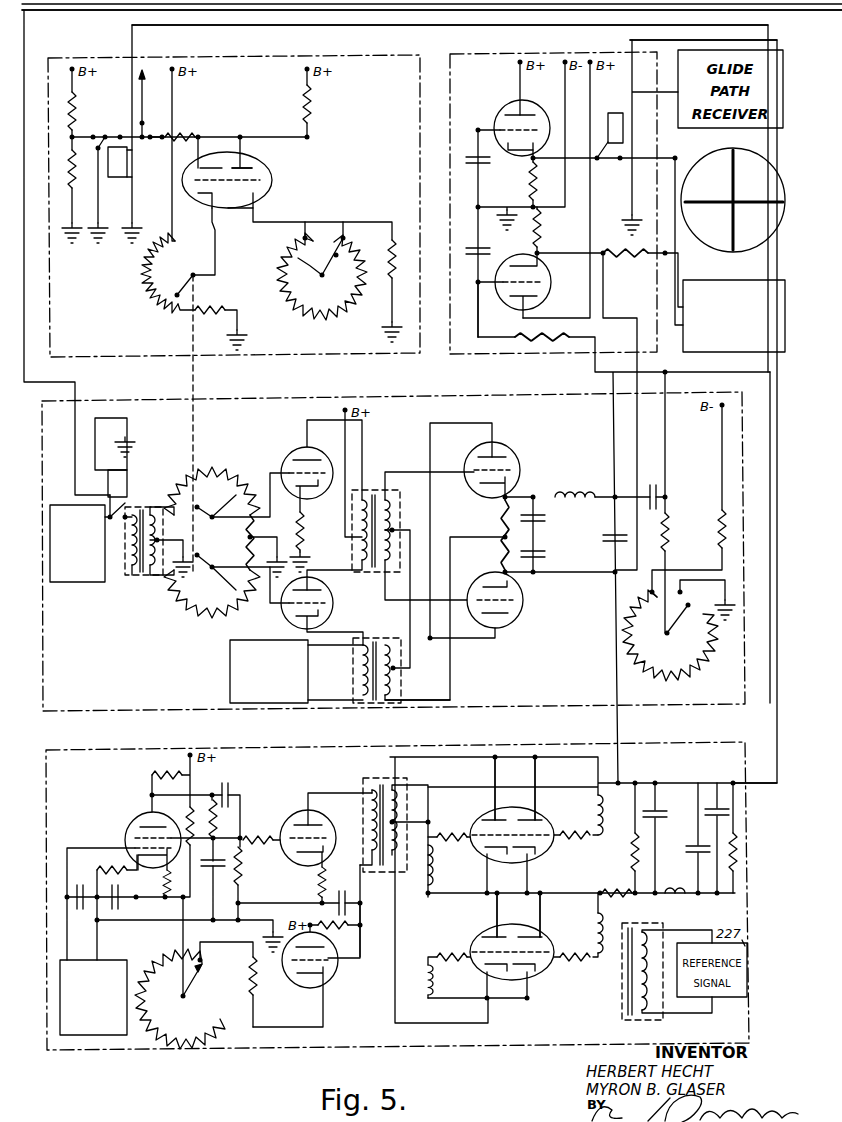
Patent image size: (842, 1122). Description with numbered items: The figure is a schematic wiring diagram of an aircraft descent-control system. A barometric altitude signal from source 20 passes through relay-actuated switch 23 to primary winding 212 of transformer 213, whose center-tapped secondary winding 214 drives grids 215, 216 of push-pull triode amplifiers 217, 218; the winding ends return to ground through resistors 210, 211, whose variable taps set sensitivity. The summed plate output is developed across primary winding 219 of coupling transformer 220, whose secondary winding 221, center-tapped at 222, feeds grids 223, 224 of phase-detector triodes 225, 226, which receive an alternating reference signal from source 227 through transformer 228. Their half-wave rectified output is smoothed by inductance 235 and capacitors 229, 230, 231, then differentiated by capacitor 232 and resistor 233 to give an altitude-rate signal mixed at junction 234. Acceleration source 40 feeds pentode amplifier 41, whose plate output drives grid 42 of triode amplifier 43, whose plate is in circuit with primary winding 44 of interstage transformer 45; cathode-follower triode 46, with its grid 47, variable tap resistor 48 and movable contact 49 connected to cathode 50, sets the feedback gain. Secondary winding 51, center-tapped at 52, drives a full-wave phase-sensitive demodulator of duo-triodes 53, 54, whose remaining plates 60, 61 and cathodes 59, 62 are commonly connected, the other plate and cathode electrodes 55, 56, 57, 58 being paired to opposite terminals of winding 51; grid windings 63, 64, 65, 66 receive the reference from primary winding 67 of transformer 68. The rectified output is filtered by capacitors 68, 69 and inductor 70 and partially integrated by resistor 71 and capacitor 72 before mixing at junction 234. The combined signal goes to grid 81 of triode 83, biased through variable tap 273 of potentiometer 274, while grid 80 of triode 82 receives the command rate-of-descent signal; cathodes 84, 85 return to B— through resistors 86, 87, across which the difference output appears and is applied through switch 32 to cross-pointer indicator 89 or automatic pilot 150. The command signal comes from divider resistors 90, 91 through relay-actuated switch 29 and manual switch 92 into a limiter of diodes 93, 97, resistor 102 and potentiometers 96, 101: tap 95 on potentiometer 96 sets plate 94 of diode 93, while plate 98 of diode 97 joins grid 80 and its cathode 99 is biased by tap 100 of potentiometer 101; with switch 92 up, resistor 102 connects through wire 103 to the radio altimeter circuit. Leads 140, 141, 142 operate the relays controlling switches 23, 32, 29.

The barometric altimeter signal source 20 is at (70, 507).
The relay-actuated switch 23 is at (131, 508).
The relay-actuated switch 29 is at (111, 136).
The relay-actuated switch 32 is at (600, 162).
The acceleration signal source 40 is at (109, 964).
The pentode amplifier 41 is at (138, 816).
The grid of triode amplifier 43 42 is at (291, 830).
The triode amplifier 43 is at (309, 806).
The primary winding of interstage transformer 44 is at (372, 778).
The interstage transformer 45 is at (403, 781).
The cathode-follower triode 46 is at (333, 972).
The grid of triode 46 47 is at (350, 950).
The variable tap resistor 48 is at (220, 1011).
The movable contact of resistor 48 49 is at (193, 953).
The cathode of pentode 41 50 is at (165, 871).
The secondary winding of interstage transformer 45 51 is at (397, 811).
The center-tap of secondary winding 51 52 is at (397, 826).
The duo-triode 53 is at (479, 820).
The duo-triode 54 is at (479, 937).
The plate 55 is at (496, 818).
The plate 56 is at (539, 818).
The cathode 57 is at (492, 996).
The cathode 58 is at (535, 996).
The cathode 59 is at (491, 870).
The plate 60 is at (533, 872).
The plate 61 is at (498, 935).
The cathode 62 is at (541, 935).
The secondary winding 63 is at (594, 812).
The secondary winding 64 is at (440, 858).
The secondary winding 65 is at (594, 932).
The secondary winding 66 is at (439, 978).
The primary winding of transformer 68 67 is at (655, 1000).
The transformer; capacitor 68 is at (659, 810).
The capacitor 69 is at (695, 847).
The inductor 70 is at (682, 888).
The resistor 71 is at (736, 880).
The capacitor 72 is at (714, 805).
The grid of triode 82 80 is at (500, 118).
The grid of triode 83 81 is at (505, 299).
The triode 82 is at (536, 114).
The triode 83 is at (552, 283).
The cathode of triode 82 84 is at (520, 156).
The cathode of triode 83 85 is at (517, 260).
The cathode resistor 86 is at (538, 178).
The cathode resistor 87 is at (543, 224).
The cross-pointer visual indicator instrument 89 is at (718, 160).
The resistor 90 is at (78, 112).
The resistor 91 is at (70, 176).
The manually operated switch 92 is at (152, 139).
The diode 93 is at (186, 152).
The plate of diode 93 94 is at (212, 215).
The variable tap of potentiometer 96 95 is at (188, 273).
The potentiometer 96 is at (148, 270).
The diode 97 is at (270, 158).
The plate of diode 97 98 is at (246, 163).
The cathode of diode 97 99 is at (260, 210).
The variable tap of potentiometer 101 100 is at (290, 257).
The potentiometer 101 is at (350, 312).
The resistor 102 is at (180, 133).
The wire 103 is at (156, 103).
The lead 140 is at (497, 10).
The lead 141 is at (630, 42).
The lead 142 is at (537, 27).
The automatic pilot means 150 is at (722, 279).
The resistor 210 is at (230, 473).
The resistor 211 is at (204, 609).
The primary winding of transformer 213 212 is at (136, 580).
The transformer 213 is at (152, 505).
The secondary winding of transformer 213 214 is at (158, 521).
The grid of triode 217 215 is at (280, 467).
The grid of triode 218 216 is at (282, 600).
The triode amplifier 217 is at (300, 446).
The triode amplifier 218 is at (292, 628).
The primary winding of coupling transformer 220 219 is at (370, 489).
The coupling transformer 220 is at (393, 510).
The secondary winding of coupling transformer 220 221 is at (393, 524).
The center-tap 222 is at (393, 540).
The grid of triode 225 223 is at (440, 471).
The grid of triode 226 224 is at (445, 561).
The triode 225 is at (512, 452).
The triode 226 is at (524, 604).
The alternating current reference signal source 227 is at (228, 650).
The transformer 228 is at (350, 669).
The capacitor 229 is at (543, 516).
The capacitor 230 is at (543, 552).
The capacitor 231 is at (604, 538).
The capacitor 232 is at (656, 486).
The resistor 233 is at (674, 522).
The junction 234 is at (678, 442).
The inductance 235 is at (590, 493).
The variable tap of potentiometer 274 273 is at (683, 631).
The potentiometer 274 is at (643, 678).